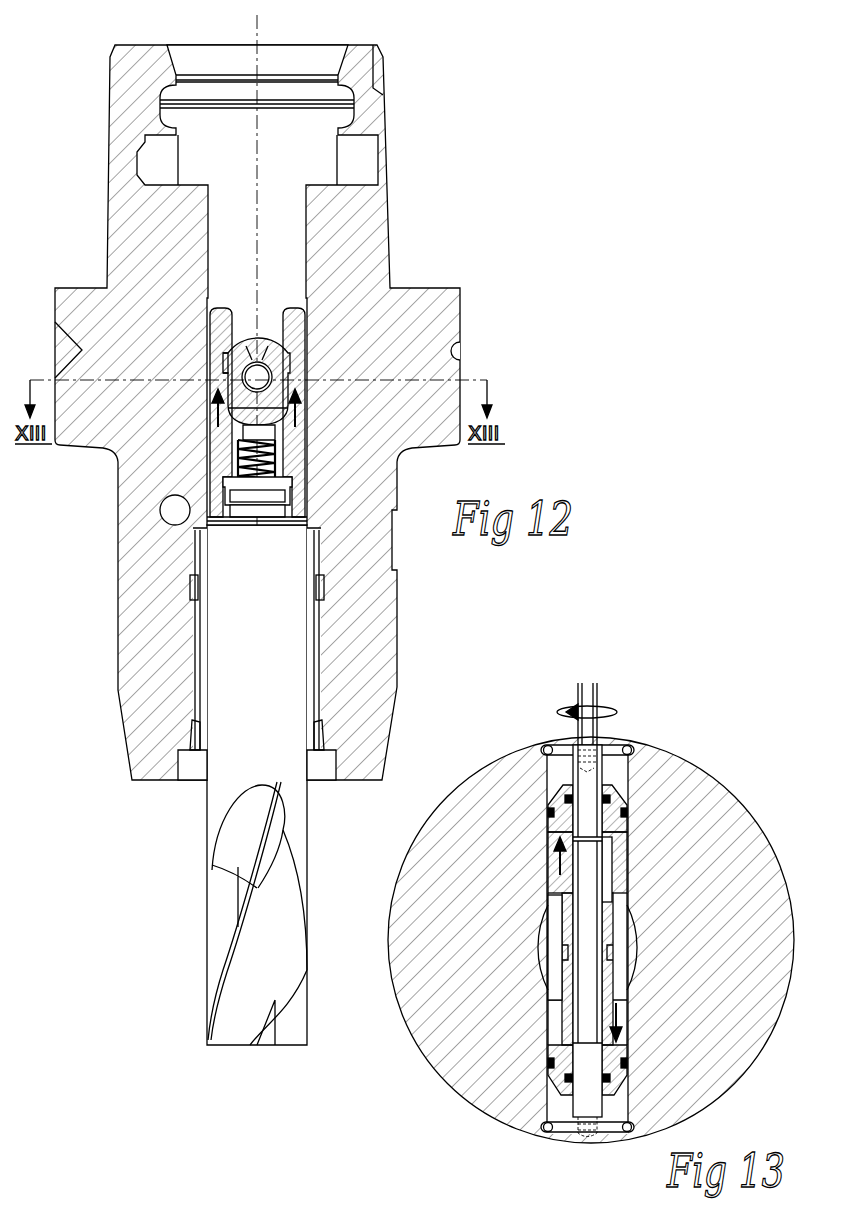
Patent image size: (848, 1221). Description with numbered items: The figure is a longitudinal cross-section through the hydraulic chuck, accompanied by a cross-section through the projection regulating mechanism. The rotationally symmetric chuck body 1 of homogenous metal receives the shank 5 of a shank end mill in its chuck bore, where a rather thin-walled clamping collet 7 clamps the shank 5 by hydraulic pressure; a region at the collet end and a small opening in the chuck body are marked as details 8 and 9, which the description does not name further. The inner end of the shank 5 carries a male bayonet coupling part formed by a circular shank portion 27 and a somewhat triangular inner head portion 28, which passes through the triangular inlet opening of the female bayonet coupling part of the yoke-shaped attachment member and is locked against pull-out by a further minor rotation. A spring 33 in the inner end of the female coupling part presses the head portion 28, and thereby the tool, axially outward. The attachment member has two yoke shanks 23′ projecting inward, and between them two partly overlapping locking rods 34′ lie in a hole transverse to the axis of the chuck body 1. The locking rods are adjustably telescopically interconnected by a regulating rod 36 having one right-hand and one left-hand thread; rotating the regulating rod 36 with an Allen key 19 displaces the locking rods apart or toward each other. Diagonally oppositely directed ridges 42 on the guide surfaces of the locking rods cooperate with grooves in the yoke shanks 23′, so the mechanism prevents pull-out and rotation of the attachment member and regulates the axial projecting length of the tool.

In FIG. 12, the chuck body 1 is at (368, 635).
In FIG. 13, the chuck body 1 is at (685, 793).
In FIG. 12, the shank 5 is at (231, 782).
In FIG. 12, the clamping collet 7 is at (202, 643).
In FIG. 12, the sleeve collar 8 is at (197, 727).
In FIG. 12, the transverse bore 9 is at (173, 513).
In FIG. 13, the Allen key 19 is at (597, 700).
In FIG. 12, the yoke shank 23′ is at (218, 328).
In FIG. 12, the shank portion 27 is at (278, 513).
In FIG. 12, the inner head portion 28 is at (283, 495).
In FIG. 12, the spring 33 is at (240, 452).
In FIG. 12, the locking rod 34′ is at (260, 343).
In FIG. 13, the locking rod 34′ is at (628, 988).
In FIG. 12, the regulating rod 36 is at (268, 367).
In FIG. 13, the regulating rod 36 is at (583, 1097).
In FIG. 12, the ridges 42 is at (228, 363).
In FIG. 13, the ridges 42 is at (556, 958).